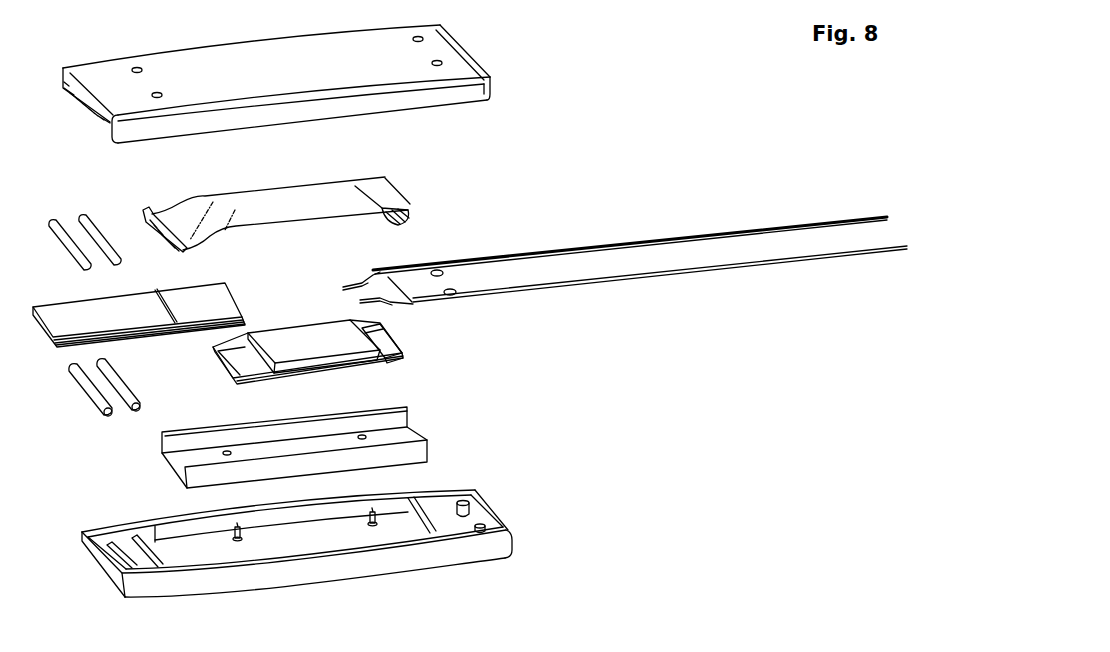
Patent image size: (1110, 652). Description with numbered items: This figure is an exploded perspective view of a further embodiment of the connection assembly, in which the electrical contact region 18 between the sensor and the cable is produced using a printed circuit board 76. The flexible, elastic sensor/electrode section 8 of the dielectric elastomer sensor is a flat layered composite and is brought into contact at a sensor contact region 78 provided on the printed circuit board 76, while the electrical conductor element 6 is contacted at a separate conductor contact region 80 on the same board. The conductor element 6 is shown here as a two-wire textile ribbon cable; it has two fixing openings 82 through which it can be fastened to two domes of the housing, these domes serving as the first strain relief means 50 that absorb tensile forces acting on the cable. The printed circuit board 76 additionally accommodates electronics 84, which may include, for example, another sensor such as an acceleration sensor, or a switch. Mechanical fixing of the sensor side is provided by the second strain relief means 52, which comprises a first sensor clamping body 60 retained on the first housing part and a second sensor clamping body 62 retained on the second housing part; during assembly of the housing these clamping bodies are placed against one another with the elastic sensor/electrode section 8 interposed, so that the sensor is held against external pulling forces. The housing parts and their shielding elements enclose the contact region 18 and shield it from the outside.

The first sensor clamping body 60 is at (48, 233).
The second sensor clamping body 62 is at (82, 388).
The second strain relief means 52 is at (88, 410).
The sensor/electrode section 8 is at (50, 305).
The electrical contact region 18 is at (387, 250).
The electrical conductor element 6 is at (605, 250).
The fixing openings 82 is at (437, 268).
The conductor contact region 80 is at (392, 328).
The electronics 84 is at (305, 340).
The sensor contact region 78 is at (215, 355).
The printed circuit board 76 is at (370, 375).
The first strain relief means 50 is at (470, 508).